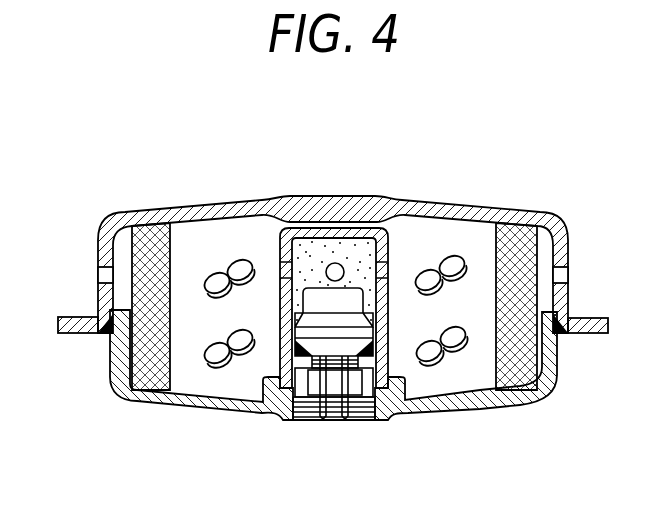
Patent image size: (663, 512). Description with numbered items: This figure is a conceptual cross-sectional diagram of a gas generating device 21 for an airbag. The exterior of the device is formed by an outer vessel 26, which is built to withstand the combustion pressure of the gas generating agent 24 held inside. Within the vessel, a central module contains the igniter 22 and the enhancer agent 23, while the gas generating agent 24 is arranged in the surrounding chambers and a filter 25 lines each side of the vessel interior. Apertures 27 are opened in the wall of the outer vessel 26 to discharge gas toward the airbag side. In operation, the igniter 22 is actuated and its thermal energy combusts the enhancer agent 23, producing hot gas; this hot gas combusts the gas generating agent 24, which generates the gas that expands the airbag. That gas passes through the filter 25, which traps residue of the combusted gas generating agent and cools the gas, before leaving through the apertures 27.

The gas generating device for airbag 21 is at (405, 170).
The igniter 22 is at (323, 342).
The enhancer agent 23 is at (356, 250).
The gas generating agent 24 is at (235, 263).
The filter 25 is at (140, 341).
The outer vessel 26 is at (462, 212).
The apertures 27 is at (104, 273).